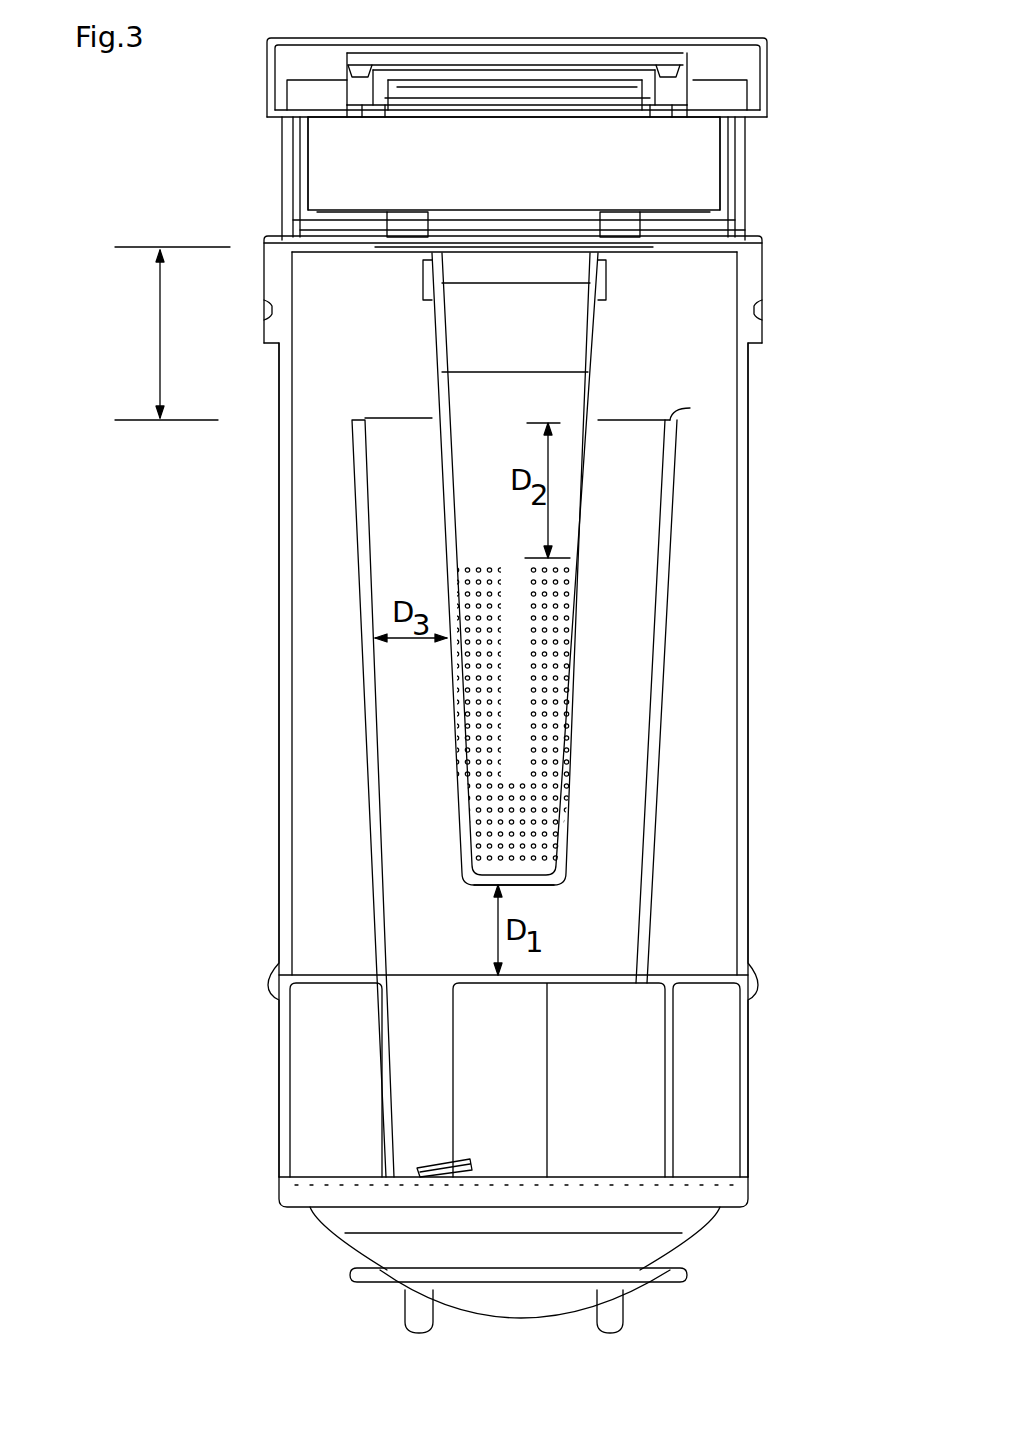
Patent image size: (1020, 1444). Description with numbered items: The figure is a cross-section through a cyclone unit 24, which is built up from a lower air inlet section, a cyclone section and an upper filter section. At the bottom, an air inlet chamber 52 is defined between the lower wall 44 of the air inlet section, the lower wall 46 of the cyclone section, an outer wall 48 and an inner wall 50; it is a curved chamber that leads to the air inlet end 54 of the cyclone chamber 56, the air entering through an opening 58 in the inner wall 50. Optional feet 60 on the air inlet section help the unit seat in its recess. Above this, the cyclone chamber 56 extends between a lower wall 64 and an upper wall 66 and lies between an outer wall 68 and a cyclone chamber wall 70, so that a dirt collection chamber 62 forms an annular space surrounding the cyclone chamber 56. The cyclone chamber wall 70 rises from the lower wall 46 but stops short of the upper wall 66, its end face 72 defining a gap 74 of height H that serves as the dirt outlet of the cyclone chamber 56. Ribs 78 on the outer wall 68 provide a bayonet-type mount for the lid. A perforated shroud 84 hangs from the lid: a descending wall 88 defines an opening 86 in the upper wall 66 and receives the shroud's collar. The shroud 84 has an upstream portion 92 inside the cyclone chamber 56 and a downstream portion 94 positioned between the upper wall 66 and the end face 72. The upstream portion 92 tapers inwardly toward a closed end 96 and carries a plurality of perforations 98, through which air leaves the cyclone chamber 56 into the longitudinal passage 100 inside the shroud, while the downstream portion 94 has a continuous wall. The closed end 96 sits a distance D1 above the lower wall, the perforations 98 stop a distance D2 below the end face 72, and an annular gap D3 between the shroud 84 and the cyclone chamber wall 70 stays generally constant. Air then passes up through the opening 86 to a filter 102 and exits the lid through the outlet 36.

The outlet 36 is at (475, 38).
The filter 102 is at (695, 158).
The opening 86 is at (543, 243).
The descending wall 88 is at (425, 270).
The upper wall 66 is at (696, 253).
The rib 78 is at (278, 312).
The downstream portion 94 is at (600, 340).
The gap 74 is at (88, 250).
The longitudinal passage 100 is at (485, 338).
The end face 72 is at (690, 408).
The perforated shroud 84 is at (435, 495).
The upstream portion 92 is at (593, 483).
The cyclone chamber wall 70 is at (675, 580).
The cyclone unit 24 is at (227, 593).
The dirt collection chamber 62 is at (722, 708).
The outer wall 68 is at (745, 695).
The perforations 98 is at (450, 725).
The closed end 96 is at (530, 888).
The cyclone chamber 56 is at (410, 910).
The opening 58 is at (473, 1010).
The lower wall 64 is at (703, 957).
The inner wall 50 is at (382, 1035).
The lower wall of cyclone section 46 is at (712, 985).
The outer wall 48 is at (280, 1073).
The air inlet chamber 52 is at (355, 1103).
The air inlet end 54 is at (407, 1118).
The lower wall of air inlet section 44 is at (745, 1190).
The feet 60 is at (615, 1318).